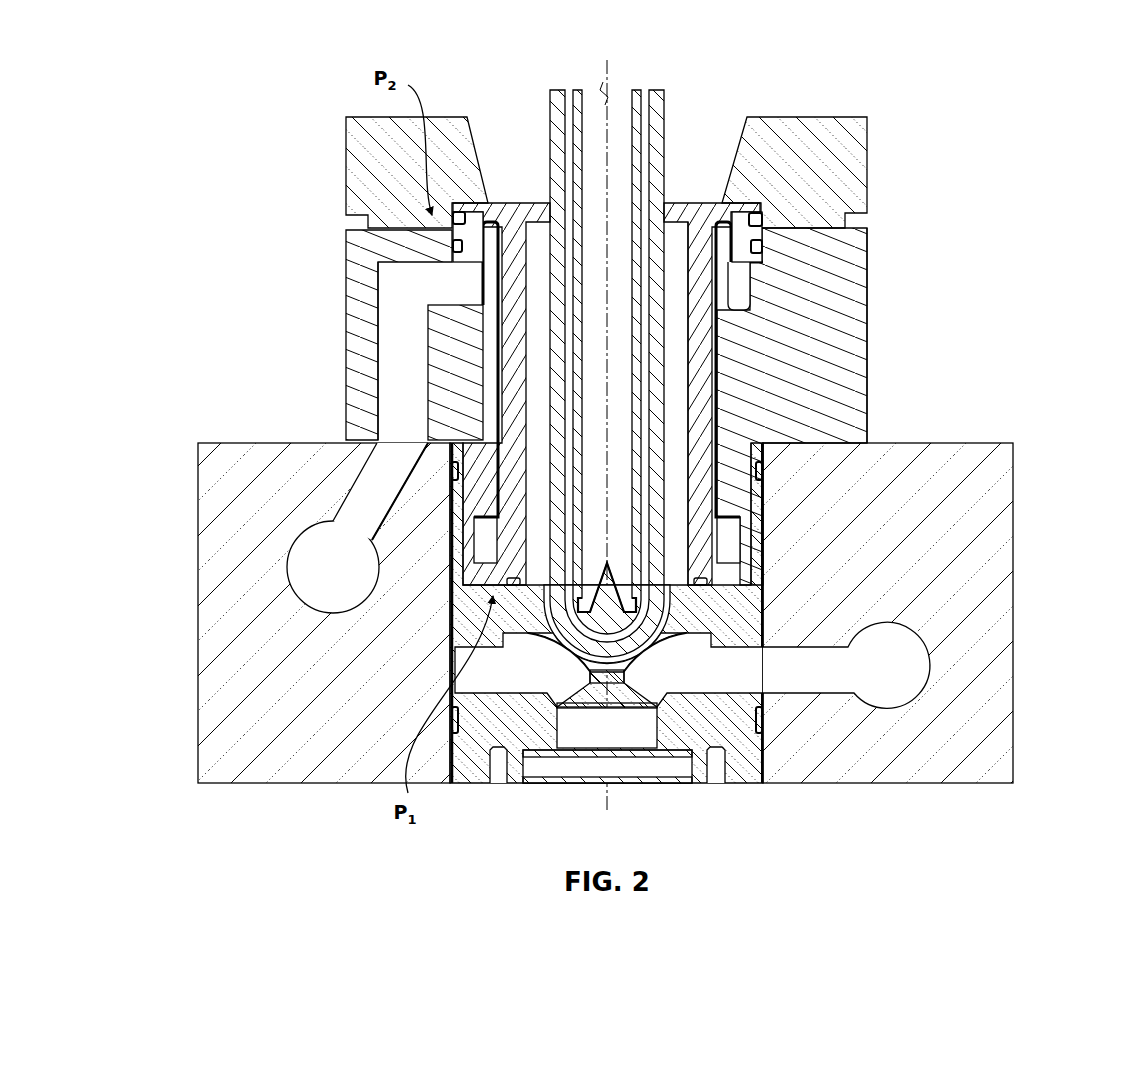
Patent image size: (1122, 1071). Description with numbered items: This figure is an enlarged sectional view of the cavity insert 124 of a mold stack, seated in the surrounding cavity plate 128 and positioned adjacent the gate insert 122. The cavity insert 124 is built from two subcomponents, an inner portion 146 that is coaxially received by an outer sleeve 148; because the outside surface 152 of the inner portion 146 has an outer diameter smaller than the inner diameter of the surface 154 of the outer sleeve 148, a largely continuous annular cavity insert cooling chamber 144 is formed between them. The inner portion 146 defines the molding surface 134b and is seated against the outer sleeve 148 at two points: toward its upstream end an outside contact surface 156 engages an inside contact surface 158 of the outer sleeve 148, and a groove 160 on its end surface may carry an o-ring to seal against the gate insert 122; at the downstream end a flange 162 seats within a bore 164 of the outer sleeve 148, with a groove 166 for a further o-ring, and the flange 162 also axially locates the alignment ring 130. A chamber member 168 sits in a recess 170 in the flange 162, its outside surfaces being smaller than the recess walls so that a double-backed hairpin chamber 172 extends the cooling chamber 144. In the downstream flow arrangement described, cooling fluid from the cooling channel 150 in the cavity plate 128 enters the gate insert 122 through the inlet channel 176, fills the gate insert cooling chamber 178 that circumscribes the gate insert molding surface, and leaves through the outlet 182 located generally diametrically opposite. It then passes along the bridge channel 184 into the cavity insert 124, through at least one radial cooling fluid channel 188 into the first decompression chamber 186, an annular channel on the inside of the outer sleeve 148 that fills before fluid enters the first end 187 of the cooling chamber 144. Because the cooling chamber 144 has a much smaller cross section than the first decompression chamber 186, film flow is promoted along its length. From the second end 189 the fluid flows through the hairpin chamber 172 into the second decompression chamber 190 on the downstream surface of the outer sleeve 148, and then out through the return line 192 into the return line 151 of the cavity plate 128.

The gate insert 122 is at (748, 623).
The cavity insert 124 is at (845, 268).
The cavity plate 128 is at (985, 753).
The alignment ring 130 is at (835, 138).
The molding surface 134b is at (333, 513).
The cavity insert cooling chamber 144 is at (717, 423).
The inner portion 146 is at (697, 345).
The outer sleeve 148 is at (833, 373).
The cooling channel 150 is at (902, 673).
The return line 151 is at (300, 593).
The outside surface 152 is at (495, 392).
The surface 154 is at (467, 333).
The outside contact surface 156 is at (450, 625).
The inside contact surface 158 is at (405, 600).
The groove 160 is at (528, 640).
The flange 162 is at (473, 217).
The bore 164 is at (460, 280).
The groove 166 is at (455, 245).
The chamber member 168 is at (722, 207).
The recess 170 is at (718, 215).
The hairpin chamber 172 is at (710, 218).
The inlet channel 176 is at (740, 675).
The gate insert cooling chamber 178 is at (680, 680).
The outlet 182 is at (540, 780).
The bridge channel 184 is at (452, 660).
The first decompression chamber 186 is at (740, 550).
The first end 187 is at (720, 492).
The radial cooling fluid channel 188 is at (307, 593).
The second end 189 is at (753, 243).
The second decompression chamber 190 is at (738, 290).
The return line 192 is at (402, 320).